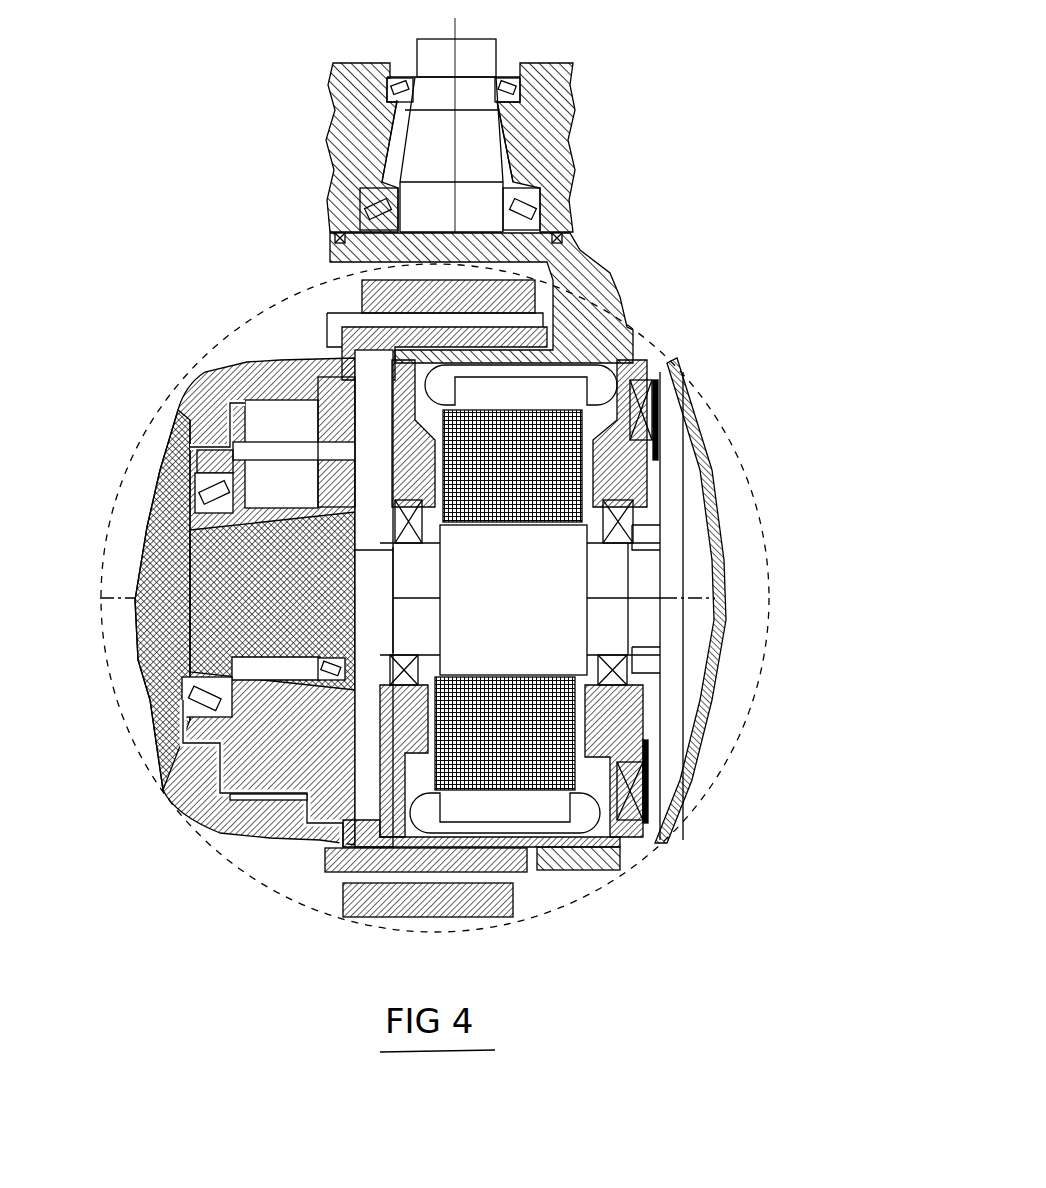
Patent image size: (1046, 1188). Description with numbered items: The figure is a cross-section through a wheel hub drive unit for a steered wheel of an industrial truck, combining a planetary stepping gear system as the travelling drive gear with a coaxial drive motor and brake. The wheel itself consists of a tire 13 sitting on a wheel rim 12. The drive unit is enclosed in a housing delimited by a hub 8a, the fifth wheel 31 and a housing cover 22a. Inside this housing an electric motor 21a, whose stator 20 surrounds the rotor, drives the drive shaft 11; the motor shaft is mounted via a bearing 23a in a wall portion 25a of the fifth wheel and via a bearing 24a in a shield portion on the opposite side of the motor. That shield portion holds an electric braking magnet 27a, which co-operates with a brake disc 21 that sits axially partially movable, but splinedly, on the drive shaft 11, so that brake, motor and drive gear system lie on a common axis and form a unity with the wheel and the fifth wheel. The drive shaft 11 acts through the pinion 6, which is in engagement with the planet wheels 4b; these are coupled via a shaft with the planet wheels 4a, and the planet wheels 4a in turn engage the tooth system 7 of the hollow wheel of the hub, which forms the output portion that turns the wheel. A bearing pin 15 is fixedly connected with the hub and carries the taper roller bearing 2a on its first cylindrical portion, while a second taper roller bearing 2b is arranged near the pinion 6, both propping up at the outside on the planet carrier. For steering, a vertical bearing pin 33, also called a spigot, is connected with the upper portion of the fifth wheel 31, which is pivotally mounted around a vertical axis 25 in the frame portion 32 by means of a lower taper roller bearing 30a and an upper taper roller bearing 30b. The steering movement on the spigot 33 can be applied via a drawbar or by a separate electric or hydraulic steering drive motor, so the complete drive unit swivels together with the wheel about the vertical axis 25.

The vertical axis 25 is at (458, 22).
The upper taper roller bearing 30b is at (398, 90).
The frame portion 32 is at (357, 141).
The vertical bearing pin 33 is at (463, 160).
The lower taper roller bearing 30a is at (370, 208).
The fifth wheel 31 is at (597, 298).
The planet wheels 4a is at (254, 360).
The planet wheels 4b is at (380, 383).
The hub 8a is at (153, 470).
The pinion 6 is at (150, 540).
The drive shaft 11 is at (600, 587).
The electric braking magnet 27a is at (650, 408).
The housing cover 22a is at (705, 482).
The electric motor 21a is at (513, 580).
The bearing 24a is at (680, 662).
The stator 20 is at (553, 733).
The brake disc 21 is at (650, 758).
The bearing pin 15 is at (215, 655).
The taper roller bearing 2a is at (187, 720).
The bearing 2b is at (200, 780).
The tooth system 7 is at (240, 830).
The wall portion 25a is at (337, 843).
The bearing 23a is at (330, 760).
The wheel rim 12 is at (520, 873).
The tire 13 is at (495, 912).